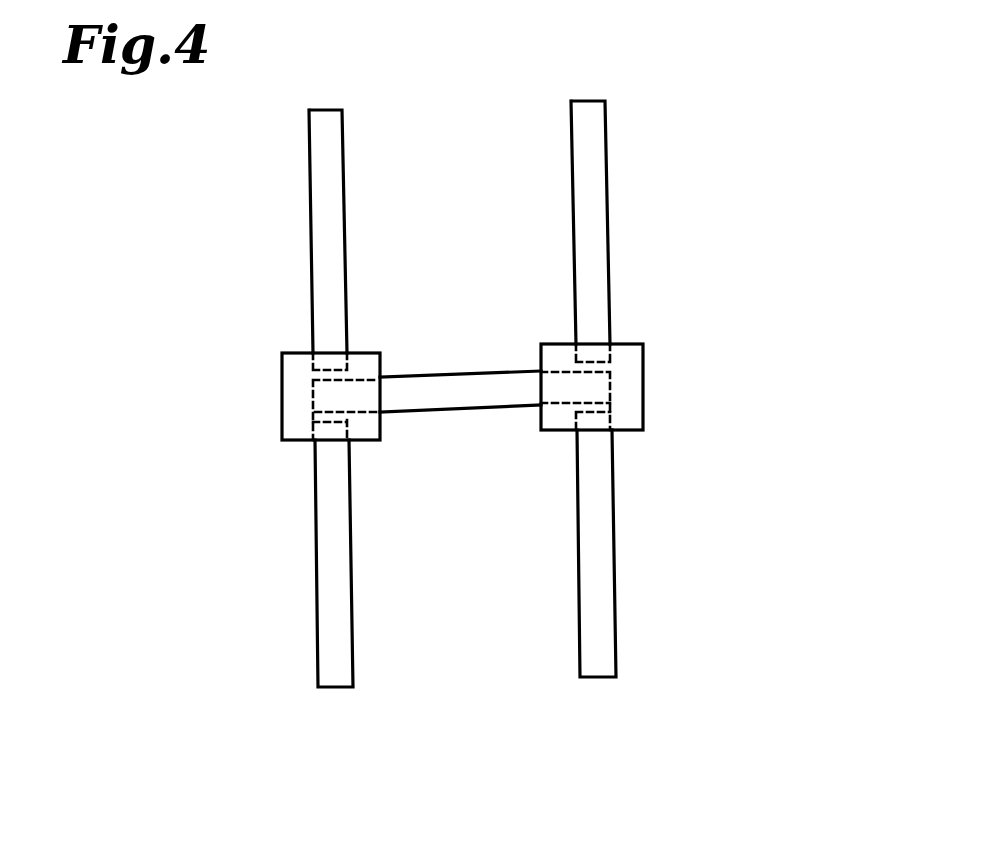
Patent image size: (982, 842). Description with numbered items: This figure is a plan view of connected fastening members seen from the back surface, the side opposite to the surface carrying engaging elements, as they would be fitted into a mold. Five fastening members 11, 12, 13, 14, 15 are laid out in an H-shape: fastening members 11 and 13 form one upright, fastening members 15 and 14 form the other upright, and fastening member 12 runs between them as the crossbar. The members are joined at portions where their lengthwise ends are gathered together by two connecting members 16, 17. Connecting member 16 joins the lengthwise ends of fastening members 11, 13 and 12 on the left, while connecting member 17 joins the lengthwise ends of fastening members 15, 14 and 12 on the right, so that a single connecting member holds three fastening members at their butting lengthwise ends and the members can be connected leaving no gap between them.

The fastening member 11 is at (345, 228).
The fastening member 12 is at (458, 410).
The fastening member 13 is at (352, 582).
The fastening member 14 is at (613, 520).
The fastening member 15 is at (607, 224).
The connecting member 16 is at (294, 406).
The connecting member 17 is at (625, 398).